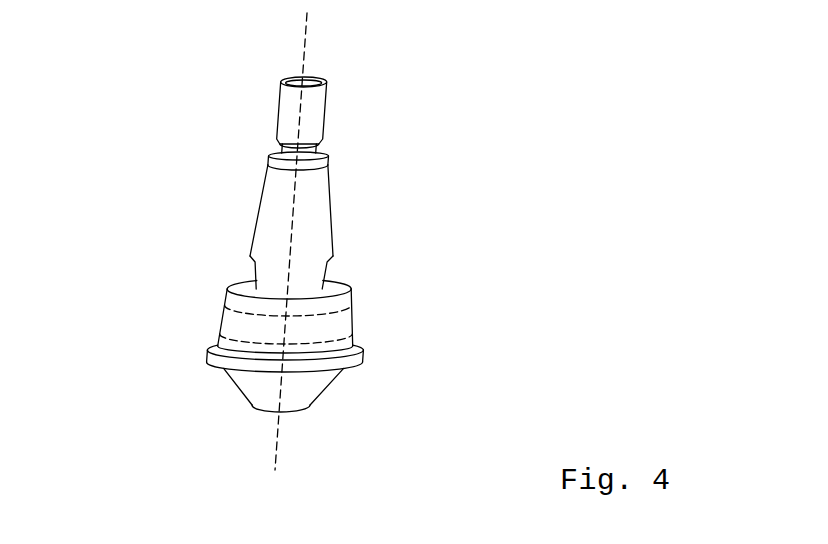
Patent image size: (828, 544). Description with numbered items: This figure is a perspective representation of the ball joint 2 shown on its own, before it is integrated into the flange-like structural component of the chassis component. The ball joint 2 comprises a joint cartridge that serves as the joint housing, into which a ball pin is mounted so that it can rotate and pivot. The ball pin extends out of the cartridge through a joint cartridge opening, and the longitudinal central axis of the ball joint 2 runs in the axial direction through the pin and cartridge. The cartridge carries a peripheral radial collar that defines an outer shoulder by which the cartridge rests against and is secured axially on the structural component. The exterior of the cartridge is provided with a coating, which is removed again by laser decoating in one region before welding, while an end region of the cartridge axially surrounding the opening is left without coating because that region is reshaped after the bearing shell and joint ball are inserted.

The ball joint 2 is at (166, 86).